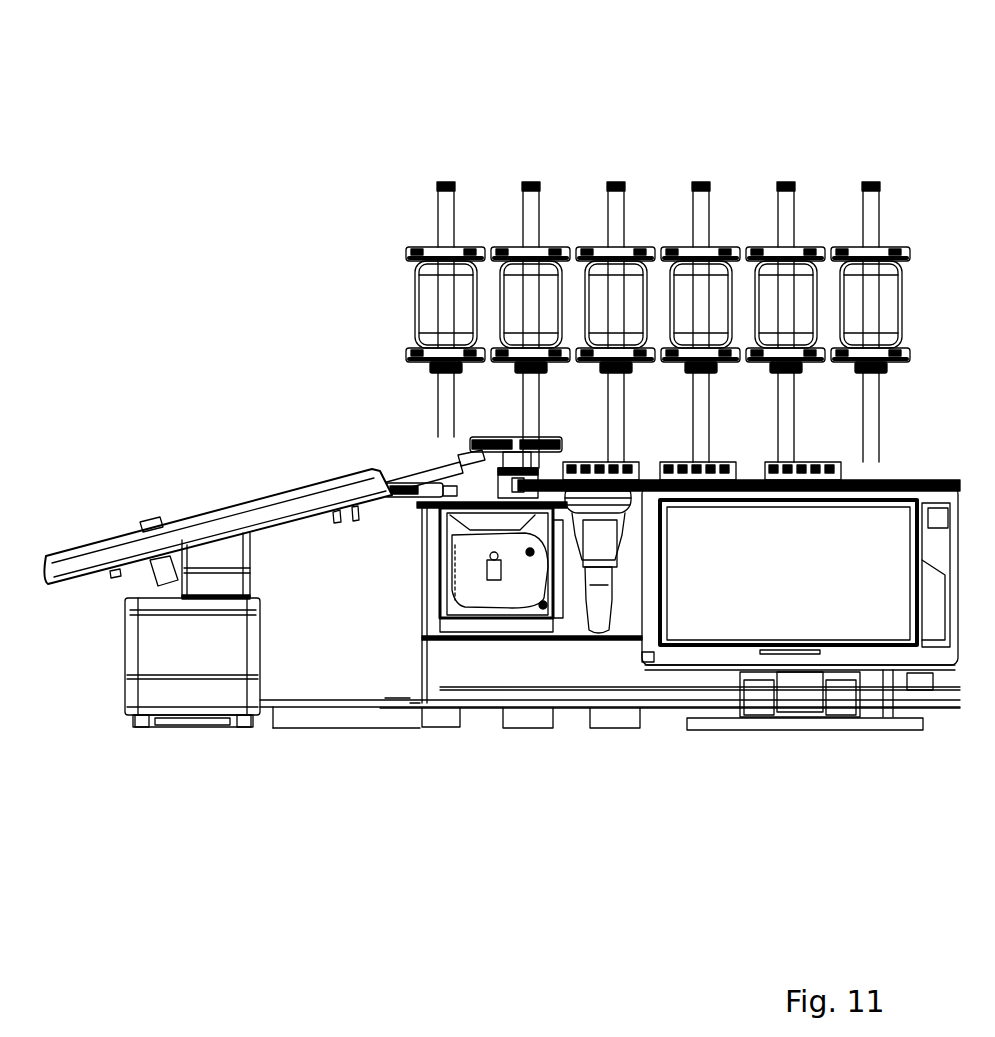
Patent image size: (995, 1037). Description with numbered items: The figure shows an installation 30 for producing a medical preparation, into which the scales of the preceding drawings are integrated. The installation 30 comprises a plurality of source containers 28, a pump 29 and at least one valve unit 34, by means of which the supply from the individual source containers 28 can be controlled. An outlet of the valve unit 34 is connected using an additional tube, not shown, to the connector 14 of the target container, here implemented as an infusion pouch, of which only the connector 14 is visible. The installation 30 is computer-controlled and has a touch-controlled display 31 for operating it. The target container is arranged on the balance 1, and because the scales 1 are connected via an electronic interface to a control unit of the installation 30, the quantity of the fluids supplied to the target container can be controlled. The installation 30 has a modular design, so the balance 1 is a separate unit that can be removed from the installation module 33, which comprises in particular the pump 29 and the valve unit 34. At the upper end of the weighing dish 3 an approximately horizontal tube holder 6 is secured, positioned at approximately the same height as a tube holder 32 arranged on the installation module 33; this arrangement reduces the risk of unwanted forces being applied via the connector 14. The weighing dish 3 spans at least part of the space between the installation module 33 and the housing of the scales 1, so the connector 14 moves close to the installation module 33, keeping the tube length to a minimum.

The balance 1 is at (260, 570).
The weighing dish 3 is at (212, 523).
The tube holder 6 is at (383, 483).
The connector 14 is at (470, 457).
The source containers 28 is at (440, 290).
The pump 29 is at (455, 600).
The installation 30 is at (543, 840).
The display 31 is at (730, 608).
The tube holder 32 is at (437, 523).
The installation module 33 is at (575, 652).
The valve unit 34 is at (603, 467).